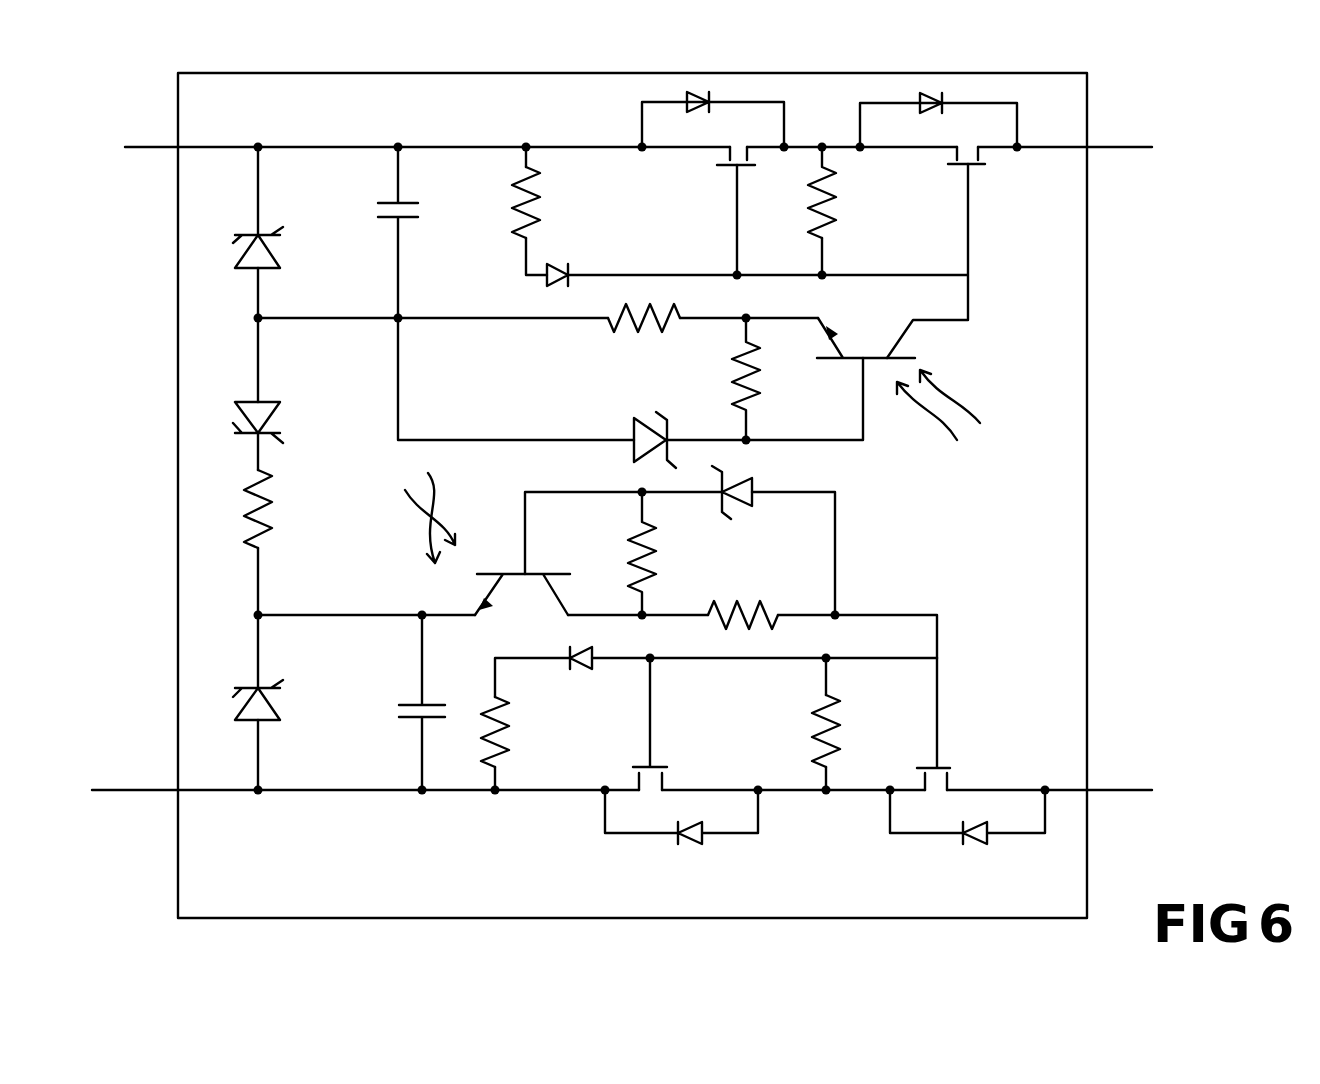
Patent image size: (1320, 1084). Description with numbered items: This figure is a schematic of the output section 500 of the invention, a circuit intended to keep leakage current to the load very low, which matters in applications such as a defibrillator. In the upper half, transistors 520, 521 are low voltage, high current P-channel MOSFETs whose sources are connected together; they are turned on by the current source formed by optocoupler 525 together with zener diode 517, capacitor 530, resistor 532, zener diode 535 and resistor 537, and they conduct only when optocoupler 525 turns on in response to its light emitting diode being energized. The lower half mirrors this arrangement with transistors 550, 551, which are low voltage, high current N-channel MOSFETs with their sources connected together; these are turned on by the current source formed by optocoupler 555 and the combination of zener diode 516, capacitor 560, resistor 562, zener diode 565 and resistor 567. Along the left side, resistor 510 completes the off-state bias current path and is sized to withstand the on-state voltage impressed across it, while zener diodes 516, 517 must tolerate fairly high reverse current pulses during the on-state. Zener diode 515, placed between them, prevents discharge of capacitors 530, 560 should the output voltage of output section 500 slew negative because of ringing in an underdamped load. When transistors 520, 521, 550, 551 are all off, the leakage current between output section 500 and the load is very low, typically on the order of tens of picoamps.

The output section 500 is at (1003, 897).
The resistor 510 is at (268, 498).
The zener diode 515 is at (304, 397).
The zener diode 516 is at (275, 693).
The zener diode 517 is at (277, 245).
The transistor 520 is at (724, 155).
The transistor 521 is at (978, 156).
The optocoupler 525 is at (882, 337).
The capacitor 530 is at (390, 200).
The resistor 532 is at (611, 308).
The zener diode 535 is at (632, 428).
The resistor 537 is at (752, 370).
The transistor 550 is at (635, 773).
The transistor 551 is at (920, 775).
The optocoupler 555 is at (524, 588).
The capacitor 560 is at (397, 704).
The resistor 562 is at (731, 598).
The zener diode 565 is at (755, 475).
The resistor 567 is at (622, 563).